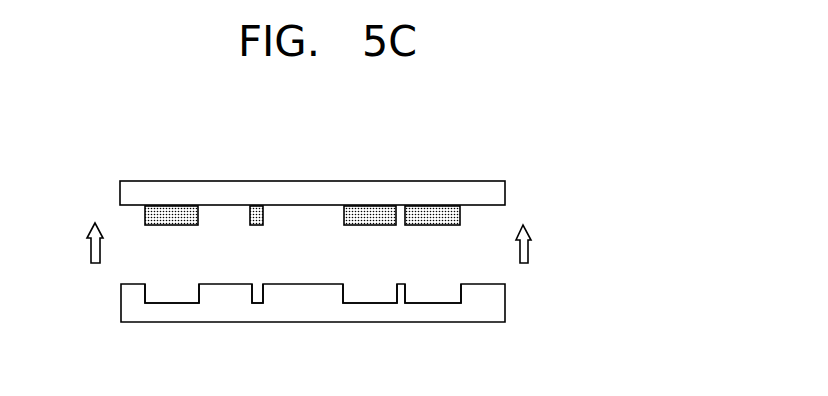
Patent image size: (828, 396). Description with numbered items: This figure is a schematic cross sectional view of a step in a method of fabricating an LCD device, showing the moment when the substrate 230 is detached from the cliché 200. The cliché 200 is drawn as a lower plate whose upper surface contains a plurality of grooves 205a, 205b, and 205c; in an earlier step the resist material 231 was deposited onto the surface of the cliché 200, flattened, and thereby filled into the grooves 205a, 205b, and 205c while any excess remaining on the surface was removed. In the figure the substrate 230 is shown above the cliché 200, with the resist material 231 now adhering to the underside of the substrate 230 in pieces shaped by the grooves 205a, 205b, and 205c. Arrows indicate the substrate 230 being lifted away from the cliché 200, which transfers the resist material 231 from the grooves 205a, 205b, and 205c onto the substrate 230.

The cliché 200 is at (500, 305).
The groove 205a is at (172, 295).
The groove 205b is at (256, 297).
The groove 205c is at (375, 296).
The substrate 230 is at (500, 192).
The resist material 231 is at (172, 208).